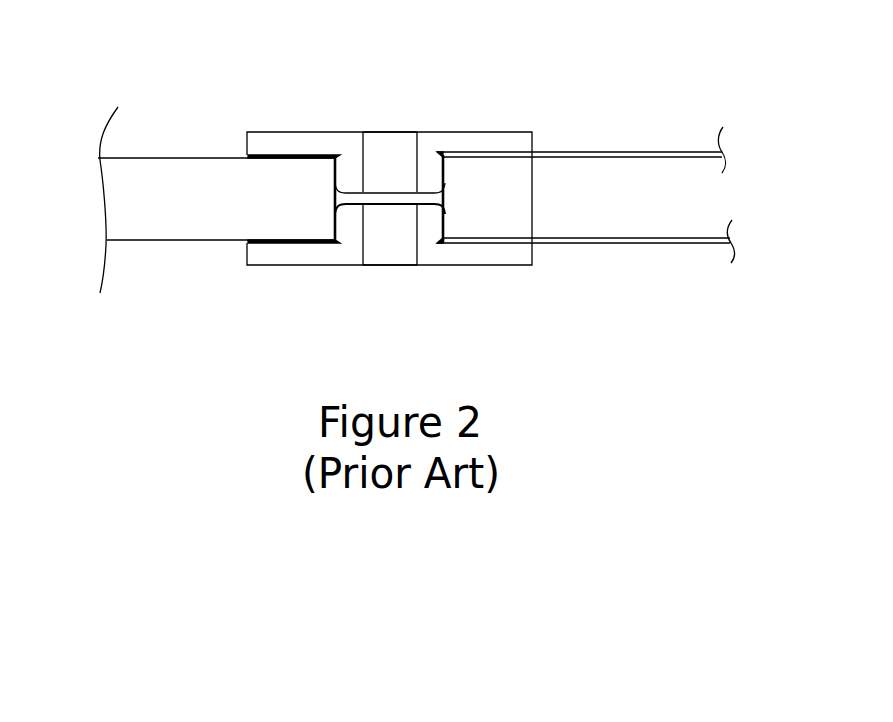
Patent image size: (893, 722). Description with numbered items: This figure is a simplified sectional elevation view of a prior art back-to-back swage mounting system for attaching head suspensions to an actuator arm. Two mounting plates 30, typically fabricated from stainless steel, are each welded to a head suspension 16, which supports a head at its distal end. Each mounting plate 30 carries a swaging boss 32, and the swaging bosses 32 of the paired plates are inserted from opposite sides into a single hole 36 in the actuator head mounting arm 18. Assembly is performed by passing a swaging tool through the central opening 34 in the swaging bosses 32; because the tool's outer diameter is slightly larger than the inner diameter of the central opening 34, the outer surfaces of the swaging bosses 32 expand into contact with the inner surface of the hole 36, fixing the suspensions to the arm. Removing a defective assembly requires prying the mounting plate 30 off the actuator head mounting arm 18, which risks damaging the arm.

The head suspension 16 is at (555, 157).
The actuator head mounting arm 18 is at (187, 178).
The mounting plate 30 is at (513, 132).
The swaging boss 32 is at (347, 142).
The central opening 34 is at (393, 147).
The hole 36 is at (338, 197).